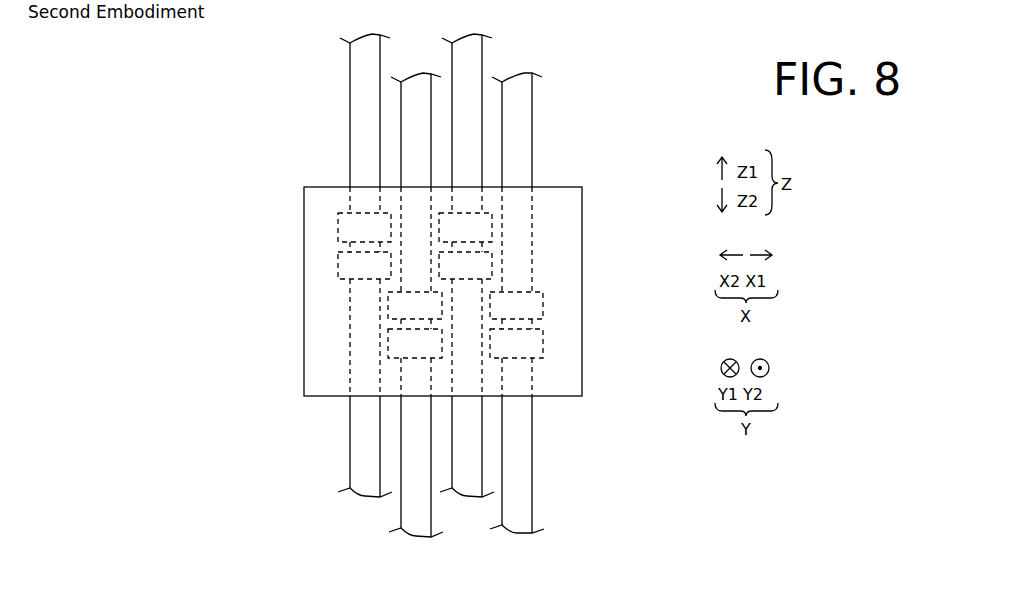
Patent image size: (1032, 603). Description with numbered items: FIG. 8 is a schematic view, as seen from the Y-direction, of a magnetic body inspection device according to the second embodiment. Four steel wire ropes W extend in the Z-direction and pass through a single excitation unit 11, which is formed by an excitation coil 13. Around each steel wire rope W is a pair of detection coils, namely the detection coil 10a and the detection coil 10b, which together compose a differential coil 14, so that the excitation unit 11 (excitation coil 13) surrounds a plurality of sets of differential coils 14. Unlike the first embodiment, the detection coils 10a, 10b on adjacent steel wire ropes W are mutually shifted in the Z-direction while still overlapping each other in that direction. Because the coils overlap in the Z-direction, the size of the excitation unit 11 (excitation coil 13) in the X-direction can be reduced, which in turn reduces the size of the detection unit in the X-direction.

The steel wire rope W is at (348, 72).
The excitation unit 11 is at (478, 261).
The excitation coil 13 is at (563, 186).
The detection coil 10a is at (338, 232).
The detection coil 10b is at (338, 267).
The differential coil 14 is at (377, 276).